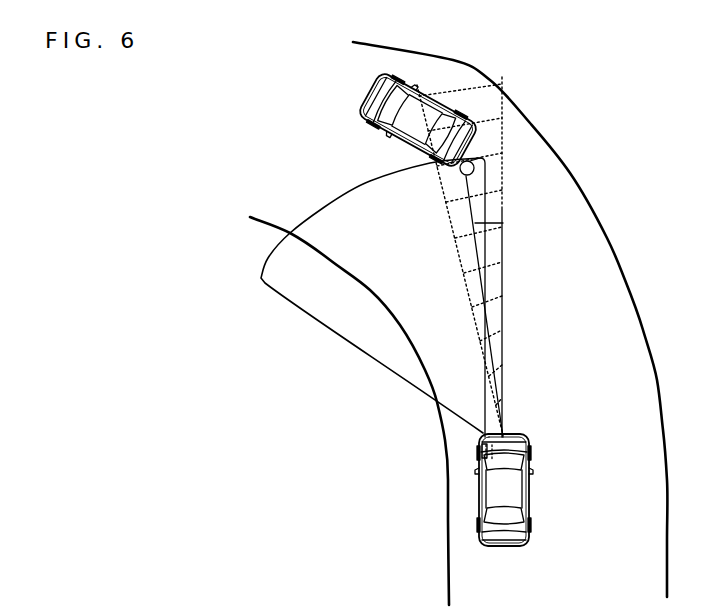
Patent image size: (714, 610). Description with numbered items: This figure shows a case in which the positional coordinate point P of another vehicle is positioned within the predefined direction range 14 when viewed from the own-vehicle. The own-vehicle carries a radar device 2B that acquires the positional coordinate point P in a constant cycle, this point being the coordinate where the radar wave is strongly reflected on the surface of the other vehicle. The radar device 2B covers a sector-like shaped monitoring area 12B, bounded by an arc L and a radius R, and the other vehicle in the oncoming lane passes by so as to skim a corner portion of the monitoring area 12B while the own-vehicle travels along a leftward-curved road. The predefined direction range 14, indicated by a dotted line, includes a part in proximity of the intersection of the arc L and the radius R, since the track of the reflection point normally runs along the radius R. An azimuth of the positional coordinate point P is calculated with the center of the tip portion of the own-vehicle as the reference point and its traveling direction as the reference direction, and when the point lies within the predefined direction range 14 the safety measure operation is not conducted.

The predefined direction range 14 is at (485, 100).
The monitoring area 12B is at (345, 300).
The radar device 2B is at (483, 460).
The arc L is at (323, 208).
The positional coordinate point P is at (485, 182).
The radius R is at (492, 214).